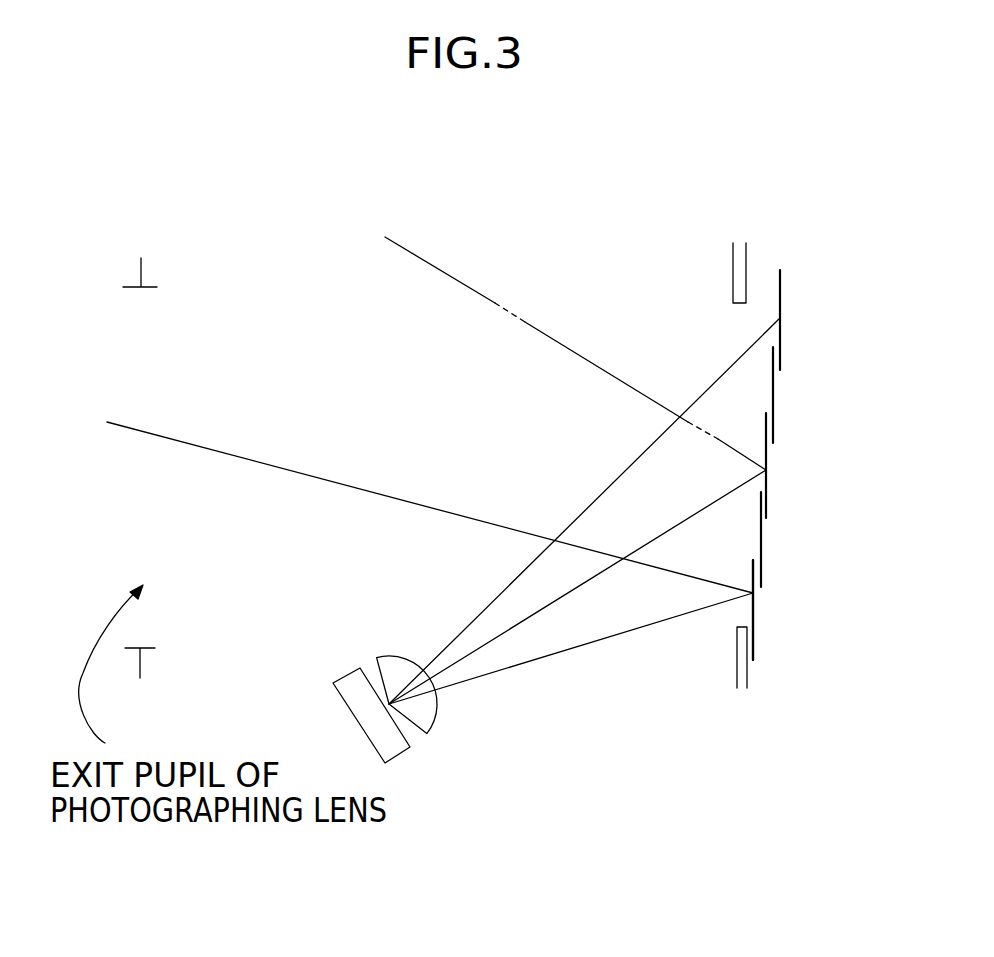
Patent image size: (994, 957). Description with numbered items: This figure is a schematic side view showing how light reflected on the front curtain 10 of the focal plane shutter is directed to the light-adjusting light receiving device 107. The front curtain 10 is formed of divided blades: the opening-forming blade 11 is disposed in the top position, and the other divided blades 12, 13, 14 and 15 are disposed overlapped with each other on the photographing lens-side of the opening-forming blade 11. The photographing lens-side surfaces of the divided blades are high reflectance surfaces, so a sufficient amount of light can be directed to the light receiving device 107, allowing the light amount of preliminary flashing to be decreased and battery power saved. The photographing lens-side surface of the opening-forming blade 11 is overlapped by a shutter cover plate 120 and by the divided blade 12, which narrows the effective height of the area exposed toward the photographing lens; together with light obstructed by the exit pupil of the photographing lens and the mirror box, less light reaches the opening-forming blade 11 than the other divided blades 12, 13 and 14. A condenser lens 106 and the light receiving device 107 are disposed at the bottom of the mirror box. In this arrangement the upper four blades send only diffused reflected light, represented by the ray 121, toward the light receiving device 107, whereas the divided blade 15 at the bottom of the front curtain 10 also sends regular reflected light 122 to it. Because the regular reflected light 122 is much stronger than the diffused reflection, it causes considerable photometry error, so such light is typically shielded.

The front curtain 10 is at (805, 268).
The opening-forming blade 11 is at (781, 285).
The divided blade 12 is at (775, 390).
The divided blade 13 is at (768, 488).
The divided blade 14 is at (762, 550).
The divided blade 15 is at (755, 618).
The condenser lens 106 is at (430, 708).
The light-adjusting light receiving device 107 is at (392, 748).
The shutter cover plate 120 is at (733, 262).
The light beam 121 is at (597, 497).
The regular reflected light 122 is at (583, 648).